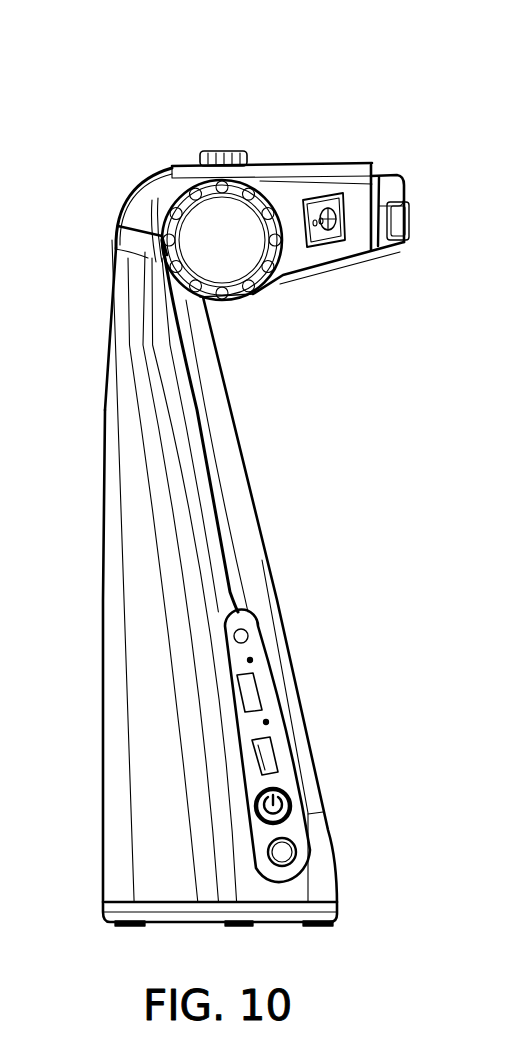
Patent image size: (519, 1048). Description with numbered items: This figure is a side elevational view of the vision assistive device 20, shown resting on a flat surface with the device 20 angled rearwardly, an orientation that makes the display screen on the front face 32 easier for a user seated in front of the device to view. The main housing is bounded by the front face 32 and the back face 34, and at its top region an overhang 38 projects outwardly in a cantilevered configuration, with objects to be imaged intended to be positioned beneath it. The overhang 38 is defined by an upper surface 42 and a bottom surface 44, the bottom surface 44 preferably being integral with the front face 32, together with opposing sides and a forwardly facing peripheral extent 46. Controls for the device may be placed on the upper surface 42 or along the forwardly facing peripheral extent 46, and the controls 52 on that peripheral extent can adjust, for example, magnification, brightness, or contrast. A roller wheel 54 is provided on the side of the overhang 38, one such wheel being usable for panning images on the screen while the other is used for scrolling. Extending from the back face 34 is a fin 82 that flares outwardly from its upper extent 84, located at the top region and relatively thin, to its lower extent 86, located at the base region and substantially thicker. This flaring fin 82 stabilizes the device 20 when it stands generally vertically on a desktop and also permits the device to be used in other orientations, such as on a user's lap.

The vision assistive device 20 is at (247, 471).
The front face 32 is at (264, 532).
The back face 34 is at (103, 545).
The overhang 38 is at (396, 188).
The upper surface 42 is at (371, 175).
The bottom surface 44 is at (314, 258).
The forwardly facing peripheral extent 46 is at (363, 203).
The controls 52 is at (322, 198).
The roller wheel 54 is at (242, 274).
The fin 82 is at (116, 709).
The upper extent 84 is at (114, 275).
The lower extent 86 is at (118, 832).